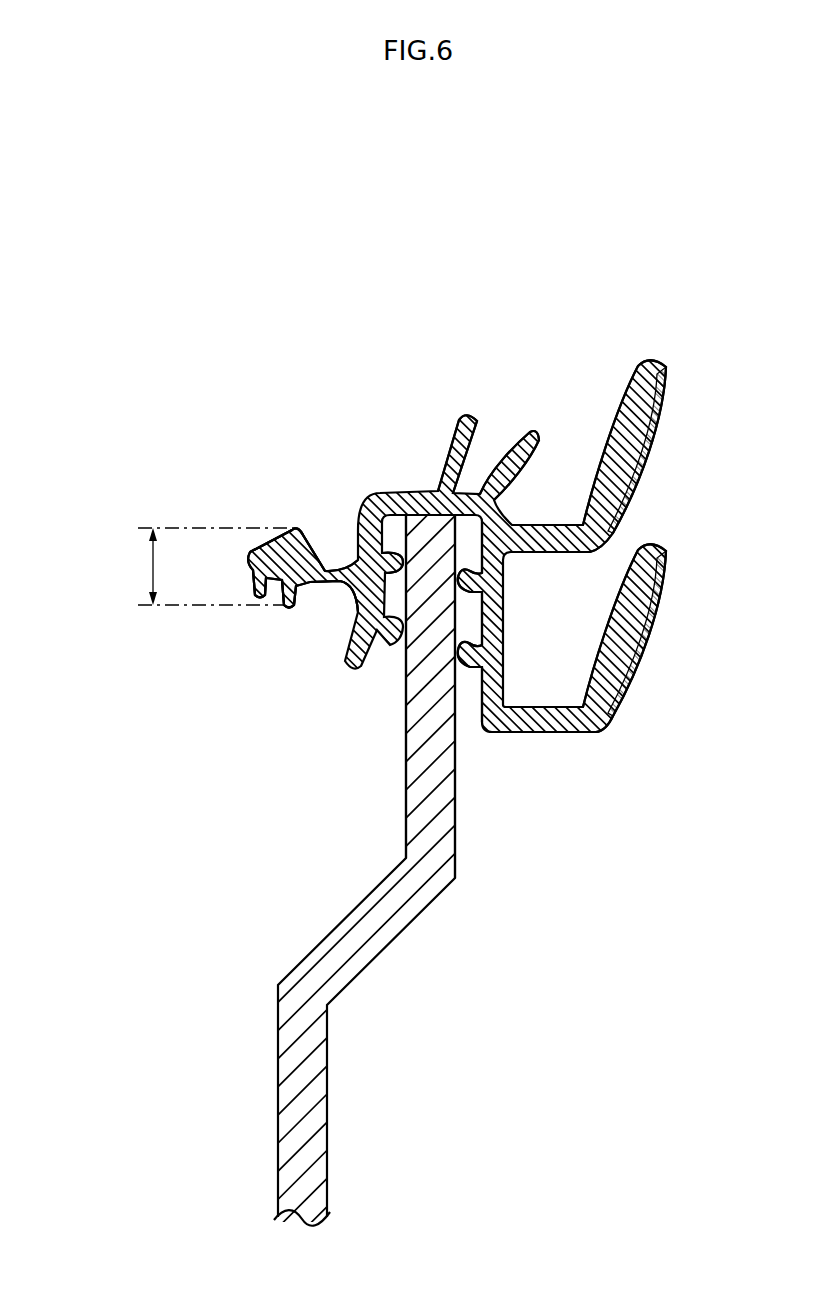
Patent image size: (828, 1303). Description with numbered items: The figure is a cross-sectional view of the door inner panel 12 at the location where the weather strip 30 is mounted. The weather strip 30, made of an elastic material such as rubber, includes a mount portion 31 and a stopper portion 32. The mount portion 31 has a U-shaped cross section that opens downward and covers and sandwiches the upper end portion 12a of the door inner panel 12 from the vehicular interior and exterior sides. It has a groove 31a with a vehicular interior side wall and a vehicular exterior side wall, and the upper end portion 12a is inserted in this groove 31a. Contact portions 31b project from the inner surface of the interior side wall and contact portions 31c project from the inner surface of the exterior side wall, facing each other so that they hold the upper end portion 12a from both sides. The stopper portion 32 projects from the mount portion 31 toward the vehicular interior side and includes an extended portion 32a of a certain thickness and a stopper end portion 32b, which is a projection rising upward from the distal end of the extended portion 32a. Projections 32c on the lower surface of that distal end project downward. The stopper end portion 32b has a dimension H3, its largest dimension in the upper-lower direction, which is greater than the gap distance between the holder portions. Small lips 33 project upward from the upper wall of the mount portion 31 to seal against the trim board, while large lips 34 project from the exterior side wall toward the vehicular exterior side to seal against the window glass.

The weather strip 30 is at (427, 594).
The mount portion 31 is at (388, 505).
The groove 31a is at (459, 643).
The contact portions 31b is at (403, 628).
The contact portions 31c is at (461, 648).
The stopper portion 32 is at (262, 564).
The extended portion 32a is at (323, 581).
The stopper end portion 32b is at (292, 545).
The projections 32c is at (283, 604).
The small lips 33 is at (460, 418).
The large lips 34 is at (640, 398).
The door inner panel 12 is at (308, 1125).
The upper end portion 12a is at (422, 753).
The dimension H3 is at (150, 570).